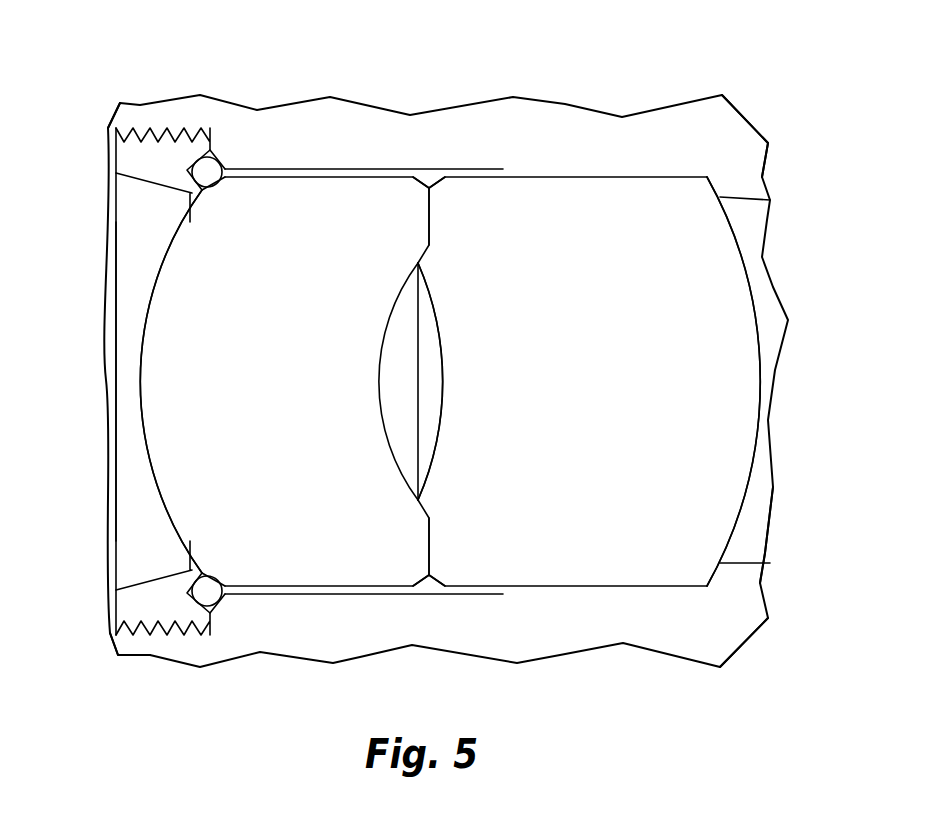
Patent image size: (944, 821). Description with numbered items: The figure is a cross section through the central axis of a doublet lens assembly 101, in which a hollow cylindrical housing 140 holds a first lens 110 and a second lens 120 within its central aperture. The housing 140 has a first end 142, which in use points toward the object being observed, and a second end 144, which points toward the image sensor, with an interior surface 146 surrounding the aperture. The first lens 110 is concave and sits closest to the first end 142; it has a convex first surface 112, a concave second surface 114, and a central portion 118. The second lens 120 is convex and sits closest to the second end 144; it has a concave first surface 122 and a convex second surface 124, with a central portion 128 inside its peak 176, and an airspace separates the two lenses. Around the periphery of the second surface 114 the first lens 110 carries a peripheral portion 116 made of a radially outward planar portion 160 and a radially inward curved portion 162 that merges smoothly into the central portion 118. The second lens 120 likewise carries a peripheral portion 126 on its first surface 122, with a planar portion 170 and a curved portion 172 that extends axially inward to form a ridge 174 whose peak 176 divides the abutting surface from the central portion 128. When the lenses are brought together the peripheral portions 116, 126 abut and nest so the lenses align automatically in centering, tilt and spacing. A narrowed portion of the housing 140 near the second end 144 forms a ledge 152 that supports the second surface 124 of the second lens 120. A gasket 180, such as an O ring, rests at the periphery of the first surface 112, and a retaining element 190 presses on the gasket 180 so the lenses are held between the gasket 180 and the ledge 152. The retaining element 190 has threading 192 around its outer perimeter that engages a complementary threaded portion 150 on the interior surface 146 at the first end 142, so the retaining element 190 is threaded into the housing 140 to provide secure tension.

The doublet lens assembly 101 is at (301, 50).
The first lens 110 is at (215, 418).
The first surface 112 is at (140, 376).
The second surface 114 is at (390, 443).
The peripheral portion 116 is at (429, 190).
The central portion 118 is at (380, 372).
The second lens 120 is at (730, 397).
The first surface 122 is at (418, 263).
The second surface 124 is at (437, 337).
The peripheral portion 126 is at (429, 233).
The central portion 128 is at (437, 442).
The housing 140 is at (233, 103).
The first end 142 is at (110, 128).
The second end 144 is at (771, 161).
The interior surface 146 is at (750, 547).
The threaded portion 150 is at (158, 635).
The ledge 152 is at (740, 643).
The planar portion 160 is at (429, 555).
The curved portion 162 is at (430, 503).
The planar portion 170 is at (429, 217).
The curved portion 172 is at (429, 247).
The ridge 174 is at (418, 500).
The peak 176 is at (560, 262).
The gasket 180 is at (210, 158).
The retaining element 190 is at (135, 255).
The threading 192 is at (147, 140).